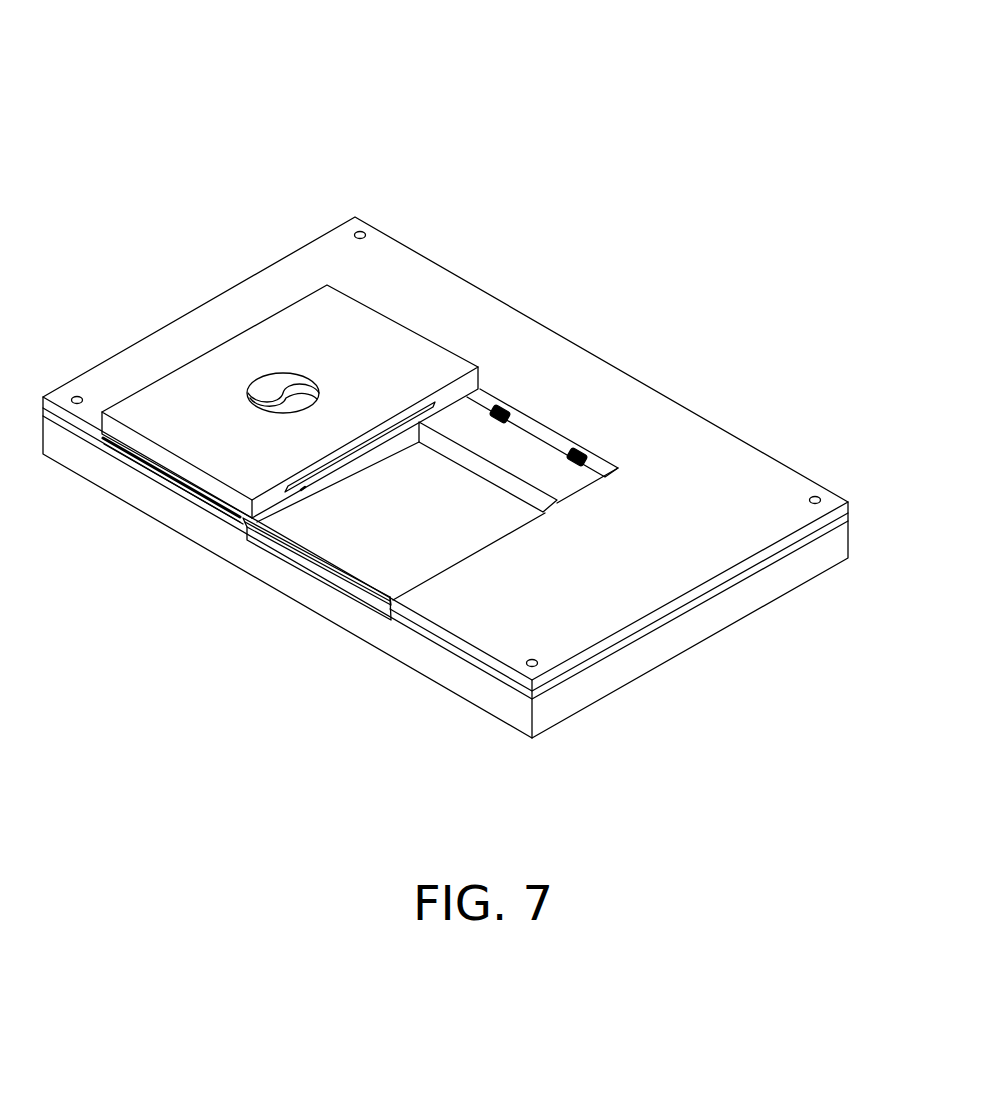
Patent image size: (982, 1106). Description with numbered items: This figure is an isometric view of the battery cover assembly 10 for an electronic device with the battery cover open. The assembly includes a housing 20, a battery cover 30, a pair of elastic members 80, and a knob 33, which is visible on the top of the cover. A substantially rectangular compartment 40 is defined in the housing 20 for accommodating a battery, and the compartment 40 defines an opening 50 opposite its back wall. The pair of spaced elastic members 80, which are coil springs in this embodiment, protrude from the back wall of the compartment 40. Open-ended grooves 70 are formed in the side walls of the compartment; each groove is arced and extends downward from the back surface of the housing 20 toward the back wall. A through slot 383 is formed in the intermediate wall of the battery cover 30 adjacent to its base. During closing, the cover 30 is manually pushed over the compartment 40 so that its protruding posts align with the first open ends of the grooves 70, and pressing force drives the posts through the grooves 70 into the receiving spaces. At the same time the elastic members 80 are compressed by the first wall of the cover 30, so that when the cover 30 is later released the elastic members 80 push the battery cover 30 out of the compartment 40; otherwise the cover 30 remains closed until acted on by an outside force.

The battery cover assembly 10 is at (510, 74).
The housing 20 is at (749, 426).
The battery cover 30 is at (203, 343).
The knob 33 is at (283, 383).
The through slot 383 is at (431, 402).
The compartment 40 is at (332, 530).
The opening 50 is at (373, 598).
The grooves 70 is at (433, 582).
The elastic members 80 is at (512, 410).